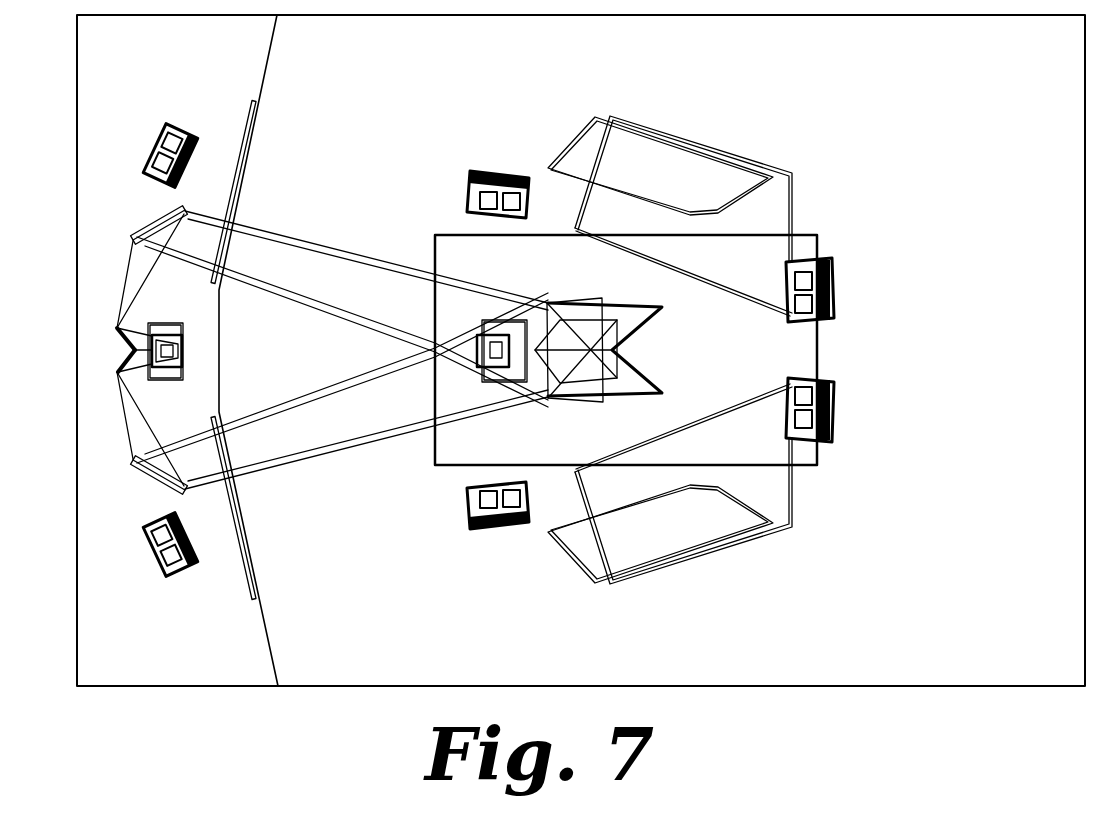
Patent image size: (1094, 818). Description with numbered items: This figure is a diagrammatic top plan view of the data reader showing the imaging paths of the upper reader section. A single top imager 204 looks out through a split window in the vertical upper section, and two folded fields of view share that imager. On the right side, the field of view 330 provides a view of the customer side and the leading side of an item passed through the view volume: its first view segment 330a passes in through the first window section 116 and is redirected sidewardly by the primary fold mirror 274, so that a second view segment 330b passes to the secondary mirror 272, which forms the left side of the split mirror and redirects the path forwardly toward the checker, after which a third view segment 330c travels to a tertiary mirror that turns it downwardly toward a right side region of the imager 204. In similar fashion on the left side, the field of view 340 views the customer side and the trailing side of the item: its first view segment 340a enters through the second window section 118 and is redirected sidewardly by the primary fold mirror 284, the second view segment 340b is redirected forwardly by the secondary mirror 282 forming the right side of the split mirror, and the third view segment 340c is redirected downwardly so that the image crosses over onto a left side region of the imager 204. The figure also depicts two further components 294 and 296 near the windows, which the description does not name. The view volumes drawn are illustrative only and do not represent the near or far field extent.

The first window section 116 is at (255, 563).
The second window section 118 is at (253, 132).
The top imager 204 is at (184, 334).
The secondary mirror 272 is at (118, 371).
The primary fold mirror 274 is at (150, 470).
The secondary mirror 282 is at (117, 330).
The primary fold mirror 284 is at (148, 230).
The lower roller 294 is at (153, 556).
The upper roller 296 is at (160, 148).
The field of view 330 is at (334, 456).
The first view segment 330a is at (272, 466).
The second view segment 330b is at (130, 418).
The third view segment 330c is at (150, 397).
The field of view 340 is at (334, 244).
The first view segment 340a is at (274, 232).
The second view segment 340b is at (128, 270).
The third view segment 340c is at (128, 322).